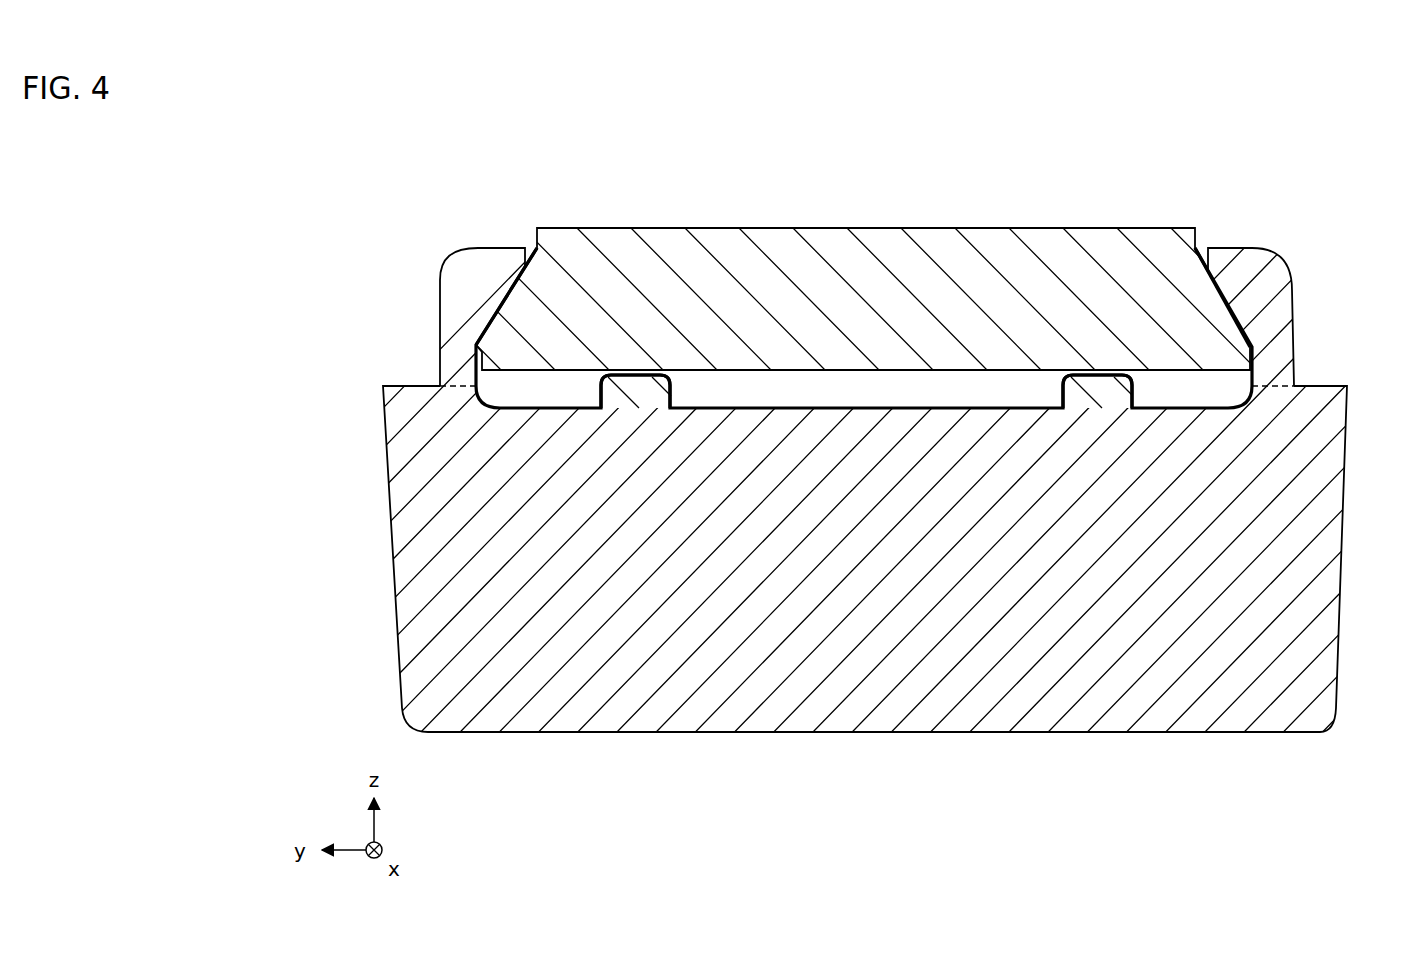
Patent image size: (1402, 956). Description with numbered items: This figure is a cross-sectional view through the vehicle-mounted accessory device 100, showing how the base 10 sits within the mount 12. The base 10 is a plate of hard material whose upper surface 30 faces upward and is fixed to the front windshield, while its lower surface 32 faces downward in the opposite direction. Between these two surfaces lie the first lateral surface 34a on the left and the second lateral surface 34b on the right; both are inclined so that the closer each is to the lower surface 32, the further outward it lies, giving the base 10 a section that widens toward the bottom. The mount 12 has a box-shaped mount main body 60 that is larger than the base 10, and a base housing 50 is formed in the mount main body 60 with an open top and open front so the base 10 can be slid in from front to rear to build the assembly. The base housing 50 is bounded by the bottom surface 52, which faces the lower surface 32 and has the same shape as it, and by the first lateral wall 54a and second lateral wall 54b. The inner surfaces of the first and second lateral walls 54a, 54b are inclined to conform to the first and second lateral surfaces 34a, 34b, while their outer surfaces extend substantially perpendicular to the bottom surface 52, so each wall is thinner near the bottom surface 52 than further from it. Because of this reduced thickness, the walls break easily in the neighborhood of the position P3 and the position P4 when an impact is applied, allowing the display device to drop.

The base 10 is at (1113, 225).
The mount 12 is at (1120, 736).
The upper surface 30 is at (868, 228).
The lower surface 32 is at (867, 372).
The first lateral surface 34a is at (518, 274).
The second lateral surface 34b is at (1215, 279).
The base housing 50 is at (1212, 387).
The bottom surface 52 is at (893, 407).
The first lateral wall 54a is at (465, 276).
The second lateral wall 54b is at (1267, 269).
The mount main body 60 is at (1237, 677).
The position P3 is at (434, 380).
The position P4 is at (1301, 382).
The vehicle-mounted accessory device 100 is at (847, 850).